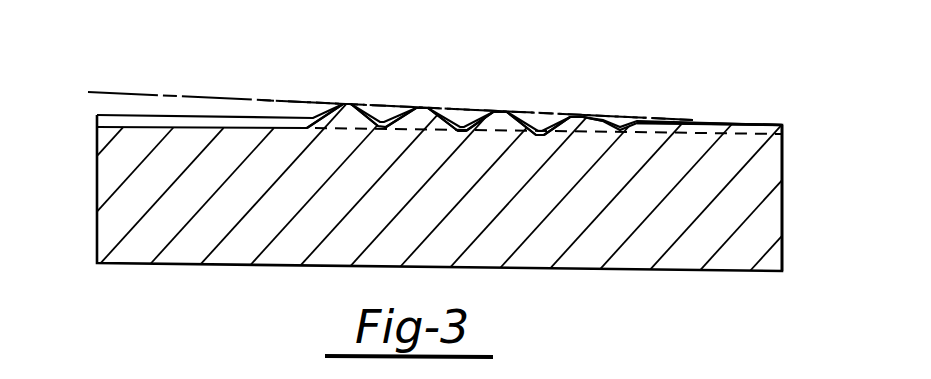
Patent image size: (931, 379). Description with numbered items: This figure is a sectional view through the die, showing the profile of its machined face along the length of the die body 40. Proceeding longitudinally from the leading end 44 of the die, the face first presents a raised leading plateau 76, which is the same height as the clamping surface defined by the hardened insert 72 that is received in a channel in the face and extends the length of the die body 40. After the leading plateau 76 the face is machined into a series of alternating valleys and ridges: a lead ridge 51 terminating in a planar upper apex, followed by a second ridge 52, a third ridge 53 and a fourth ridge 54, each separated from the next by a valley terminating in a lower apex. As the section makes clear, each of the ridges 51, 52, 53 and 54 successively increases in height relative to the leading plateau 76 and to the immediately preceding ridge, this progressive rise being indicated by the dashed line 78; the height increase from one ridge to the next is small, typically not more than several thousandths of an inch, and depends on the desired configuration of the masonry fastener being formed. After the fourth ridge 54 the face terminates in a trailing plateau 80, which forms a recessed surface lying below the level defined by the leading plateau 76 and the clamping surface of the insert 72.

The die body 40 is at (512, 215).
The leading end 44 is at (782, 192).
The lead ridge 51 is at (600, 120).
The second ridge 52 is at (484, 118).
The third ridge 53 is at (410, 108).
The fourth ridge 54 is at (353, 104).
The hardened insert 72 is at (97, 122).
The leading plateau 76 is at (731, 120).
The dashed line 78 is at (263, 100).
The trailing plateau 80 is at (173, 128).